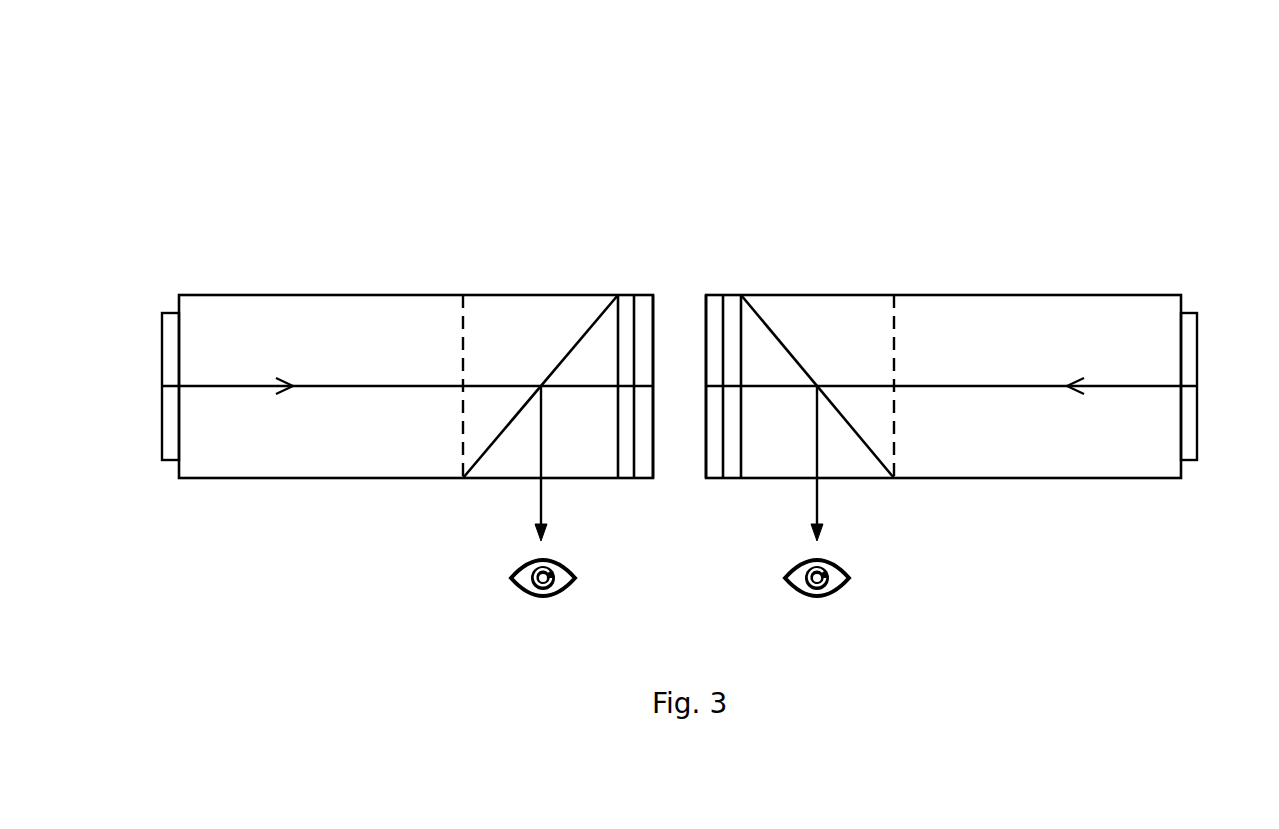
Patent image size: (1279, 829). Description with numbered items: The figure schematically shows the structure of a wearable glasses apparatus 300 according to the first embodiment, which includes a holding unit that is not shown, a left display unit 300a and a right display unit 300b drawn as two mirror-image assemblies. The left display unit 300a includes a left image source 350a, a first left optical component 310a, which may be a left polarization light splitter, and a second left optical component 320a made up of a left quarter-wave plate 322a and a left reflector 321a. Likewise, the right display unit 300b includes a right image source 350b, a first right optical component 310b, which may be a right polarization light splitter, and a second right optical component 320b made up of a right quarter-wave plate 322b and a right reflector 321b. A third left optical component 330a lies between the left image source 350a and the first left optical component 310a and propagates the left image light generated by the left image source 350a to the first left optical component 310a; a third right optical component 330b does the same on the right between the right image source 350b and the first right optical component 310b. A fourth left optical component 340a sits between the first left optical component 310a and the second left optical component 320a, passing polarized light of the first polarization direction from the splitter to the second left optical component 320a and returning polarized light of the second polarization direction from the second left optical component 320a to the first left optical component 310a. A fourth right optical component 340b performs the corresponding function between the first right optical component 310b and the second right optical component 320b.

The wearable glasses apparatus 300 is at (184, 64).
The left display unit 300a is at (386, 177).
The right display unit 300b is at (1028, 176).
The third left optical component 330a is at (325, 330).
The third right optical component 330b is at (1035, 328).
The first left optical component 310a is at (565, 352).
The first right optical component 310b is at (793, 353).
The second left optical component 320a is at (599, 399).
The second right optical component 320b is at (759, 397).
The left quarter-wave plate 322a is at (630, 303).
The right quarter-wave plate 322b is at (730, 303).
The left reflector 321a is at (645, 470).
The right reflector 321b is at (714, 470).
The fourth left optical component 340a is at (595, 465).
The fourth right optical component 340b is at (763, 465).
The left image source 350a is at (162, 443).
The right image source 350b is at (1197, 445).